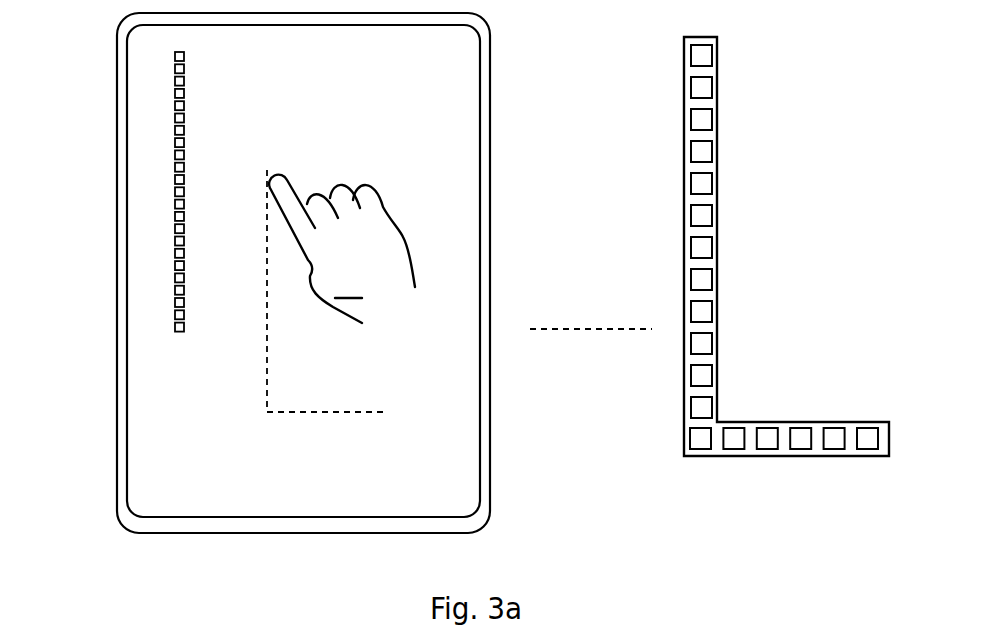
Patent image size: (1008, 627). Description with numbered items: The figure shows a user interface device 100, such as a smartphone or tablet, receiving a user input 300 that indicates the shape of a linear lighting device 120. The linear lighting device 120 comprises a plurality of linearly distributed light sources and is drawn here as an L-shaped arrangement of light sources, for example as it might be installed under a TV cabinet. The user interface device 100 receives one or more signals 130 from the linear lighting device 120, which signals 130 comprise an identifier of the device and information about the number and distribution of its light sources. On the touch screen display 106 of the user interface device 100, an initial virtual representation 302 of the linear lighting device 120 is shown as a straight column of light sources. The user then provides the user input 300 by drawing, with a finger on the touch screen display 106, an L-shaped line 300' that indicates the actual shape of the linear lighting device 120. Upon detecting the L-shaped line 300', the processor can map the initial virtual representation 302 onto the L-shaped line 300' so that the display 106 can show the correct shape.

The user interface device 100 is at (483, 51).
The display 106 is at (169, 472).
The initial virtual representation 302 is at (175, 227).
The user input 300 is at (367, 249).
The L-shaped line 300' is at (334, 291).
The linear lighting device 120 is at (695, 264).
The signals 130 is at (558, 340).